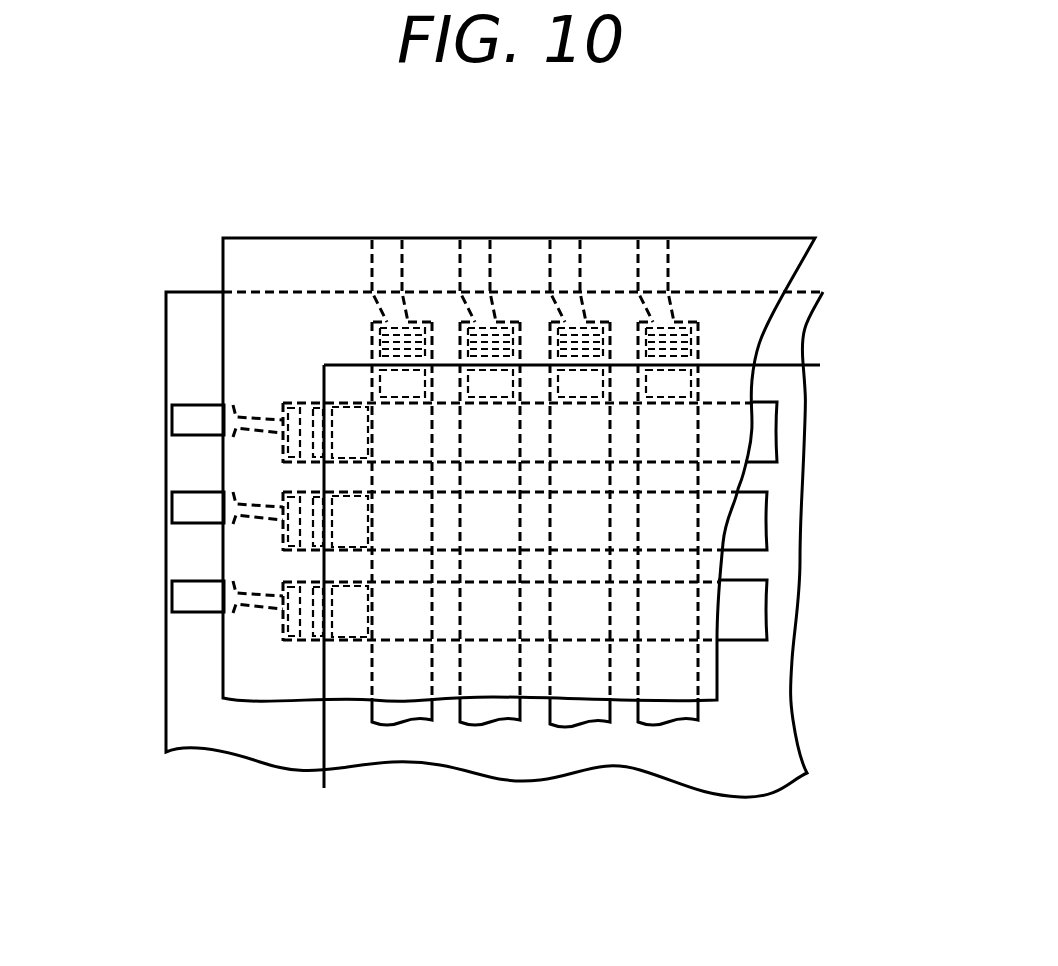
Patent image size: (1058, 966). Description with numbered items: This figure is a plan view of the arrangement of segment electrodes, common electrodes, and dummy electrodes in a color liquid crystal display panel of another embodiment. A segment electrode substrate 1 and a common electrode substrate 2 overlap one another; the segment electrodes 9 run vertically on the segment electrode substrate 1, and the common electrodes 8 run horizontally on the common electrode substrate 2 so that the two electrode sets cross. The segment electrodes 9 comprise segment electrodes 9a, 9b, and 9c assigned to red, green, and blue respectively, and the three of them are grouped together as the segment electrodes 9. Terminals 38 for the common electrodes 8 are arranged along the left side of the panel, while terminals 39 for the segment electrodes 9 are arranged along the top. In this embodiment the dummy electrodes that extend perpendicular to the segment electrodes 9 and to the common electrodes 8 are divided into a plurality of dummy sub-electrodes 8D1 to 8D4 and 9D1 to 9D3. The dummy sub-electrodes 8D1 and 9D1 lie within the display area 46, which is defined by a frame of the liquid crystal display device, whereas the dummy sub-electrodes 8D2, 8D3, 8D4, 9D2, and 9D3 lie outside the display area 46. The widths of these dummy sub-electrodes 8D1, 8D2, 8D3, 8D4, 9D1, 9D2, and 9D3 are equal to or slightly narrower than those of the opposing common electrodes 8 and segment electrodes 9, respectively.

The segment electrode substrate 1 is at (722, 248).
The common electrode substrate 2 is at (180, 667).
The common electrodes 8 is at (768, 430).
The segment electrodes 9 is at (535, 614).
The segment electrode for red 9a is at (410, 715).
The segment electrode for green 9b is at (495, 713).
The segment electrode for blue 9c is at (588, 570).
The terminals for the common electrodes 38 is at (188, 598).
The terminals for the segment electrodes 39 is at (652, 247).
The display area 46 is at (735, 385).
The dummy sub-electrode 8D1 is at (378, 383).
The dummy sub-electrode 8D2 is at (377, 357).
The dummy sub-electrode 8D3 is at (377, 342).
The dummy sub-electrode 8D4 is at (377, 327).
The dummy sub-electrode 9D1 is at (342, 460).
The dummy sub-electrode 9D2 is at (315, 412).
The dummy sub-electrode 9D3 is at (287, 412).